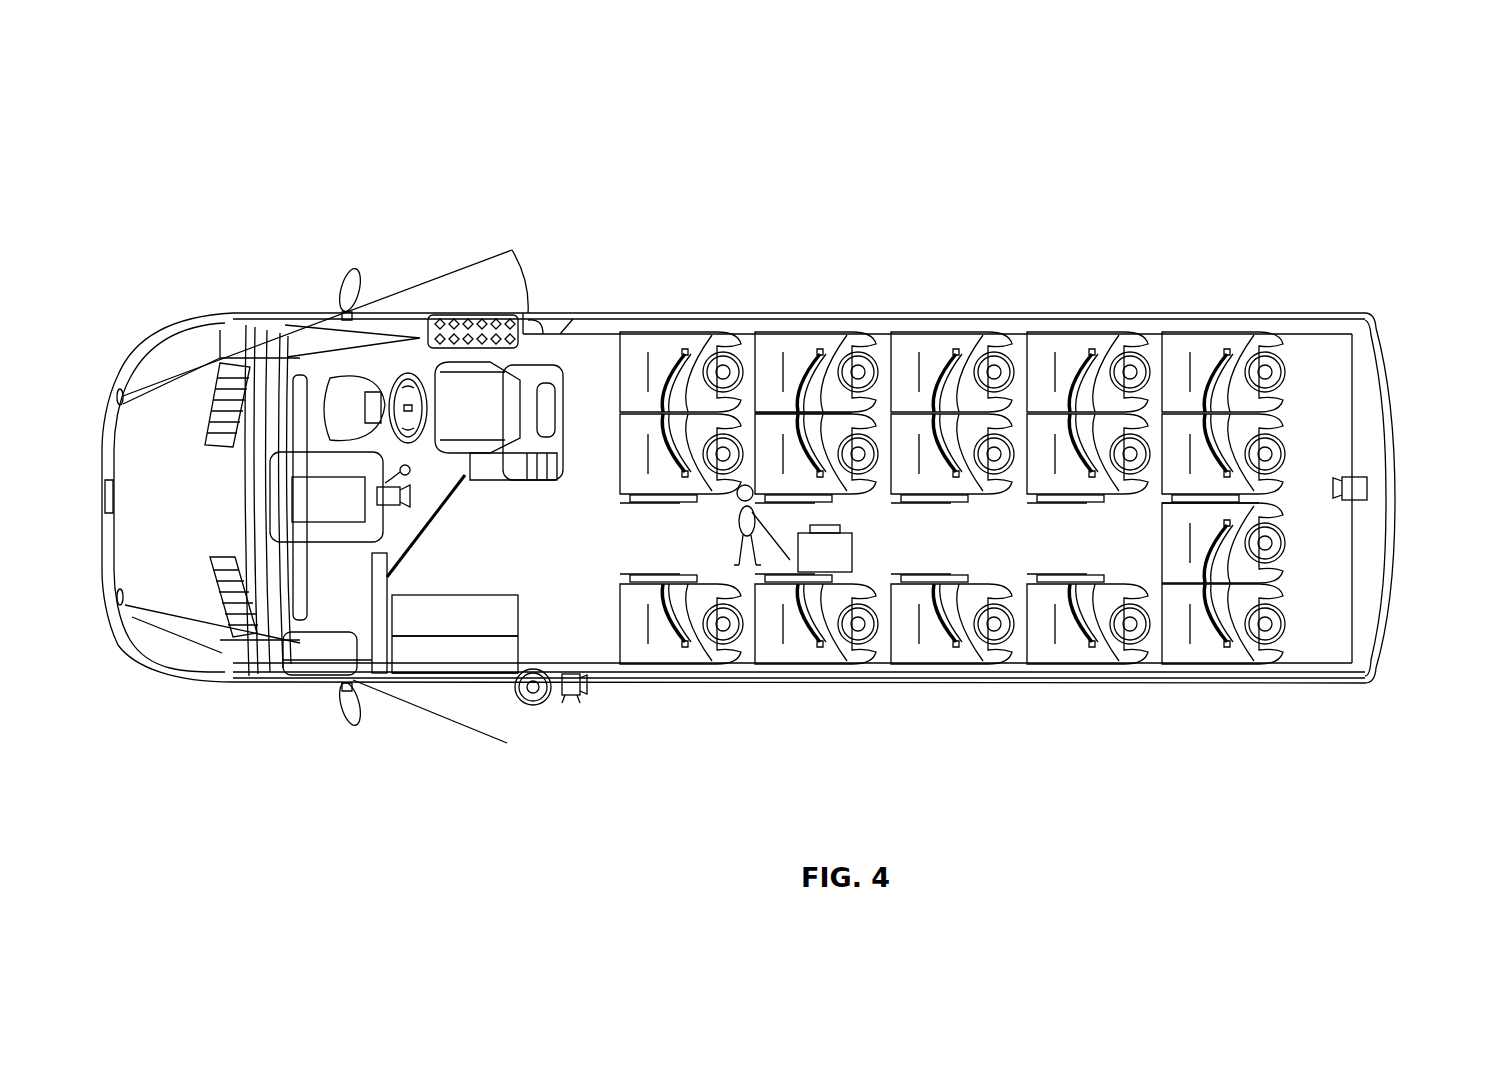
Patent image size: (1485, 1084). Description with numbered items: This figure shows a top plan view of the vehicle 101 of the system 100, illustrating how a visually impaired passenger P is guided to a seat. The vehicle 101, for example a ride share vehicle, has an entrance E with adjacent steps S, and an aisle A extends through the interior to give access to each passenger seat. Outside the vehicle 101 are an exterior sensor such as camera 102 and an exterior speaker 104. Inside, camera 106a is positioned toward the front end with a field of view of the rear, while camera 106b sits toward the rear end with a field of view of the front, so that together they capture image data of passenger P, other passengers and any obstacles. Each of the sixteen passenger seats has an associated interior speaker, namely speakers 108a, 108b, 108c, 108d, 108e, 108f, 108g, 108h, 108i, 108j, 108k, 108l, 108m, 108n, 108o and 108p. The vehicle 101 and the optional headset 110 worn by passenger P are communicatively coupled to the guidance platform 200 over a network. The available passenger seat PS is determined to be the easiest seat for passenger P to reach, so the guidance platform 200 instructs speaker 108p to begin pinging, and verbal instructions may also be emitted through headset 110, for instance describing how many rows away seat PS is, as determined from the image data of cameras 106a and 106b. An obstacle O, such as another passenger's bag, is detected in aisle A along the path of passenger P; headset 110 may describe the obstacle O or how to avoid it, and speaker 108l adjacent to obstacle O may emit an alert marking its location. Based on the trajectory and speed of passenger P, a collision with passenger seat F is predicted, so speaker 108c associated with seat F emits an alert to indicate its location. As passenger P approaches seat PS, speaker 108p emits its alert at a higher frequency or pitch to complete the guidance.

The system 100 is at (213, 147).
The vehicle 101 is at (197, 313).
The camera 102 is at (583, 697).
The speaker 104 is at (530, 703).
The camera 106a is at (407, 502).
The camera 106b is at (1357, 487).
The speaker 108a is at (727, 440).
The speaker 108b is at (732, 365).
The speaker 108c is at (870, 445).
The speaker 108d is at (862, 365).
The speaker 108e is at (1005, 447).
The speaker 108f is at (997, 365).
The speaker 108g is at (1140, 445).
The speaker 108h is at (1130, 362).
The speaker 108i is at (1275, 447).
The speaker 108j is at (1270, 363).
The speaker 108k is at (727, 640).
The speaker 108l is at (860, 640).
The speaker 108m is at (997, 640).
The speaker 108n is at (1130, 640).
The speaker 108o is at (1262, 637).
The speaker 108p is at (1270, 553).
The headset 110 is at (728, 507).
The guidance platform 200 is at (347, 507).
The passenger seat F is at (788, 447).
The passenger P is at (748, 535).
The obstacle O is at (845, 555).
The aisle A is at (877, 570).
The entrance E is at (422, 676).
The steps S is at (493, 657).
The available passenger seat PS is at (1173, 540).